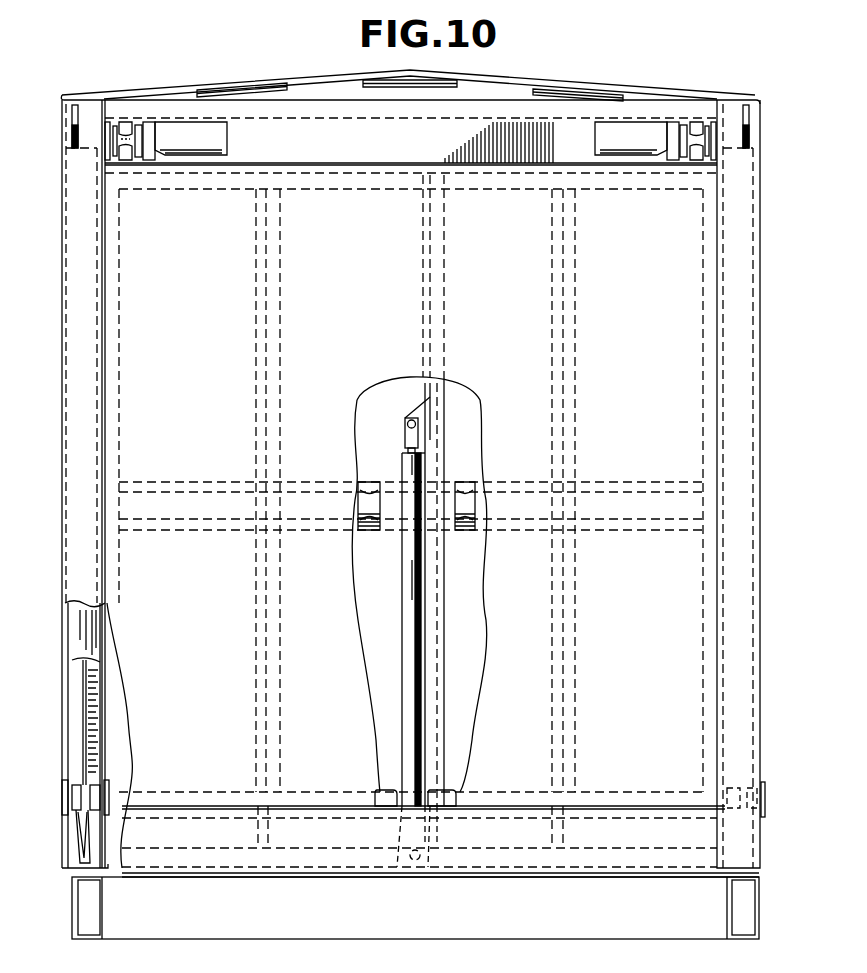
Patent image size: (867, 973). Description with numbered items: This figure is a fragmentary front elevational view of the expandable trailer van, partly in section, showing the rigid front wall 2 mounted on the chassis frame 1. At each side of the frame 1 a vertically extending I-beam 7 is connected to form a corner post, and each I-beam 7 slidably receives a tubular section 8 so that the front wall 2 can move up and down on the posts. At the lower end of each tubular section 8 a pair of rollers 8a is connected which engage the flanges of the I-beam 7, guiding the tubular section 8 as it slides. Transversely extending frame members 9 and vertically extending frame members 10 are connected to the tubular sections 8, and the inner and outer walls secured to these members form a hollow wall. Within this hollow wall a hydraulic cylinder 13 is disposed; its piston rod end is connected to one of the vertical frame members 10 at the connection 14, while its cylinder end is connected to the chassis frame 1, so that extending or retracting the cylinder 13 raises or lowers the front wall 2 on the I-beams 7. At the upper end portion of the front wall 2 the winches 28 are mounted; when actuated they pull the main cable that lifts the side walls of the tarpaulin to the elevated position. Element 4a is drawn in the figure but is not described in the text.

The chassis frame 1 is at (764, 911).
The front wall 2 is at (696, 358).
The roof plates 4a is at (232, 84).
The I-beam 7 is at (80, 722).
The tubular section 8 is at (68, 690).
The rollers 8a is at (78, 800).
The transverse frame member 9 is at (362, 530).
The vertical frame member 10 is at (445, 580).
The hydraulic cylinder 13 is at (415, 668).
The piston rod end connection 14 is at (405, 427).
The winch 28 is at (126, 132).